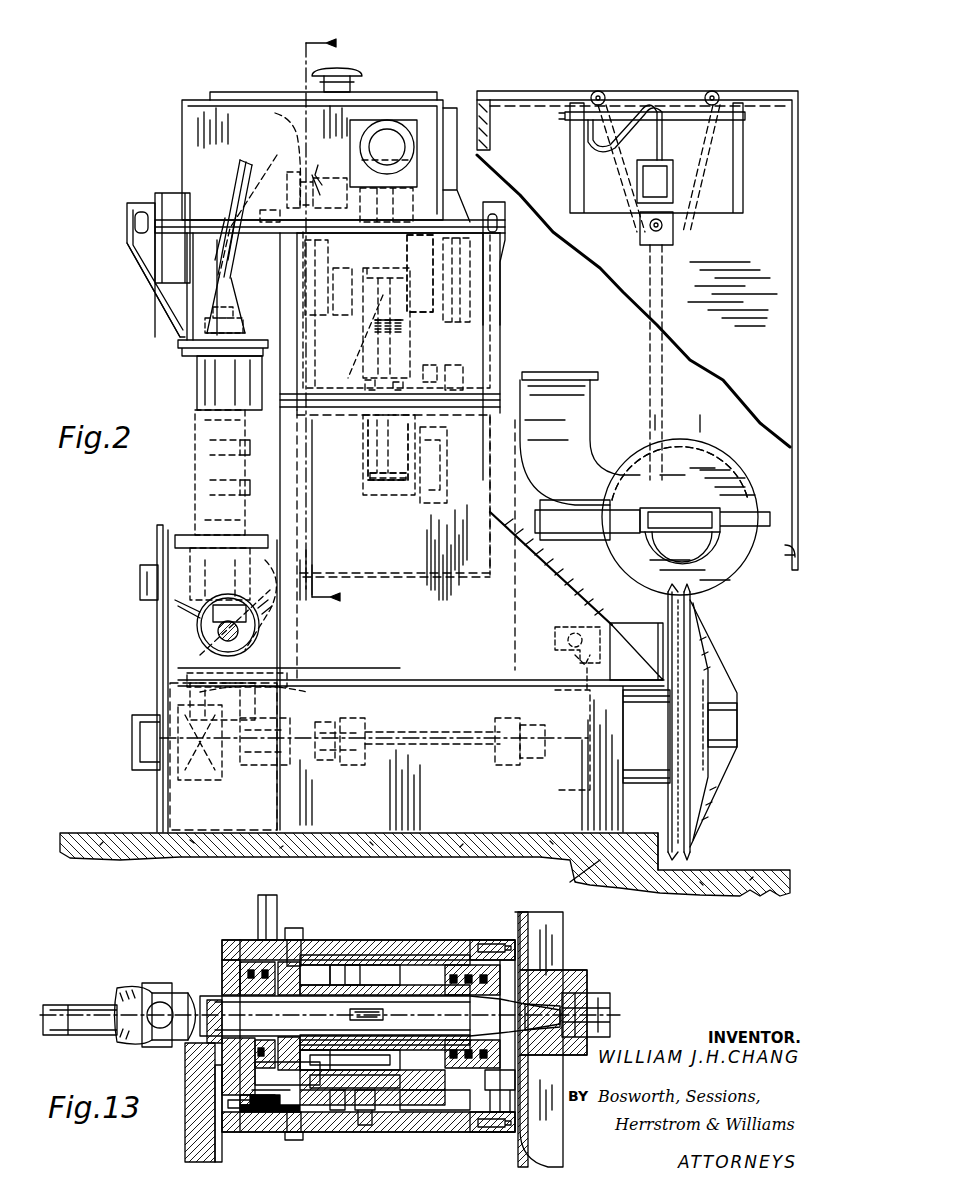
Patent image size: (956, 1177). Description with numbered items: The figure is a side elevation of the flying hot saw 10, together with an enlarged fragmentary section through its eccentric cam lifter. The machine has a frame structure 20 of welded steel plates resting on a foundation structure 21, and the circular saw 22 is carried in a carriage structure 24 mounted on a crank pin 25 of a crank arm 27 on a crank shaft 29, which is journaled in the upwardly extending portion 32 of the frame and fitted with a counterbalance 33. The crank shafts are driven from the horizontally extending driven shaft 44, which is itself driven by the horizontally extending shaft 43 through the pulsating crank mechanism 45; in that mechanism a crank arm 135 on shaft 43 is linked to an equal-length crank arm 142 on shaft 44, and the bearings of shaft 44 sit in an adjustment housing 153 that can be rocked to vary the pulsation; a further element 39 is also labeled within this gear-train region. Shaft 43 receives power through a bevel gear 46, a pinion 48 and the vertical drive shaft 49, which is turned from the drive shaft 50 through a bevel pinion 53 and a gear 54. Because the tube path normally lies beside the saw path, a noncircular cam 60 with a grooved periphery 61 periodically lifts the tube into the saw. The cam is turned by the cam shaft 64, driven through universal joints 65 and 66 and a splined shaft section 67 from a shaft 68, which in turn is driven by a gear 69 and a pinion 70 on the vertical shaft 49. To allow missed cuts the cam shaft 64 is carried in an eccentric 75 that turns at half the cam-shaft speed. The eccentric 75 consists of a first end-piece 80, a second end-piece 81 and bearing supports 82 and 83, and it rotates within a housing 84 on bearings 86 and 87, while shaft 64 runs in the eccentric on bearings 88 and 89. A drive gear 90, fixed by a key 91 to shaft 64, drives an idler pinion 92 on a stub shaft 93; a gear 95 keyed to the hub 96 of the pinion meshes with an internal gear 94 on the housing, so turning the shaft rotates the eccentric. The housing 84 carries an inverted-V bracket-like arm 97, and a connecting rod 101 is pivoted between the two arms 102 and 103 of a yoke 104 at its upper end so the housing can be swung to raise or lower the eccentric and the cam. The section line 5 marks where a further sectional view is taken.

In FIG. 2, the section line 5- 5 is at (323, 313).
In FIG. 2, the flying hot saw 10 is at (425, 482).
In FIG. 2, the frame structure 20 is at (598, 812).
In FIG. 2, the foundation structure 21 is at (612, 870).
In FIG. 2, the circular saw 22 is at (725, 570).
In FIG. 2, the carriage structure 24 is at (690, 462).
In FIG. 2, the crank pin 25 is at (700, 500).
In FIG. 2, the crank arm 27 is at (572, 474).
In FIG. 2, the crank shaft 29 is at (440, 368).
In FIG. 2, the upwardly extending portion of the frame structure 32 is at (490, 325).
In FIG. 2, the counterbalance 33 is at (490, 275).
In FIG. 2, the valve 39 is at (382, 492).
In FIG. 2, the horizontally extending shaft 43 is at (253, 206).
In FIG. 2, the horizontally extending driven shaft 44 is at (412, 318).
In FIG. 2, the pulsating crank mechanism 45 is at (318, 165).
In FIG. 2, the bevel gear 46 is at (245, 175).
In FIG. 2, the pinion 48 is at (175, 325).
In FIG. 2, the vertical drive shaft 49 is at (205, 388).
In FIG. 2, the drive shaft 50 is at (220, 640).
In FIG. 2, the bevel pinion 53 is at (198, 628).
In FIG. 2, the gear 54 is at (300, 625).
In FIG. 2, the cam 60 is at (700, 832).
In FIG. 2, the grooved periphery 61 is at (697, 851).
In FIG. 2, the cam shaft 64 is at (530, 760).
In FIG. 13, the cam shaft 64 is at (215, 1002).
In FIG. 2, the universal joint 65 is at (500, 765).
In FIG. 13, the universal joint 65 is at (125, 990).
In FIG. 2, the universal joint 66 is at (350, 765).
In FIG. 2, the splined shaft section 67 is at (400, 725).
In FIG. 2, the shaft 68 is at (250, 765).
In FIG. 2, the gear 69 is at (200, 780).
In FIG. 2, the pinion 70 is at (280, 692).
In FIG. 2, the eccentric 75 is at (612, 760).
In FIG. 13, the eccentric 75 is at (435, 982).
In FIG. 13, the first end-piece 80 is at (215, 1086).
In FIG. 13, the second end-piece 81 is at (510, 1078).
In FIG. 13, the bearing support 82 is at (290, 1112).
In FIG. 13, the bearing support 83 is at (440, 1110).
In FIG. 13, the housing 84 is at (335, 955).
In FIG. 13, the bearing 86 is at (256, 962).
In FIG. 13, the bearing 87 is at (470, 944).
In FIG. 13, the bearing 88 is at (296, 970).
In FIG. 13, the bearing 89 is at (452, 1000).
In FIG. 13, the drive gear 90 is at (365, 965).
In FIG. 13, the key 91 is at (346, 1016).
In FIG. 13, the idler pinion 92 is at (375, 1110).
In FIG. 13, the stub shaft 93 is at (410, 1076).
In FIG. 13, the internal gear 94 is at (350, 977).
In FIG. 13, the gear 95 is at (350, 1046).
In FIG. 13, the hub 96 is at (340, 1110).
In FIG. 2, the bracket-like arm 97 is at (580, 668).
In FIG. 2, the connecting rod 101 is at (575, 625).
In FIG. 2, the arm of yoke 102 is at (568, 630).
In FIG. 2, the arm of yoke 103 is at (605, 622).
In FIG. 2, the yoke 104 is at (605, 660).
In FIG. 2, the crank arm 135 is at (267, 155).
In FIG. 2, the crank arm 142 is at (325, 345).
In FIG. 2, the adjustment housing 153 is at (356, 457).